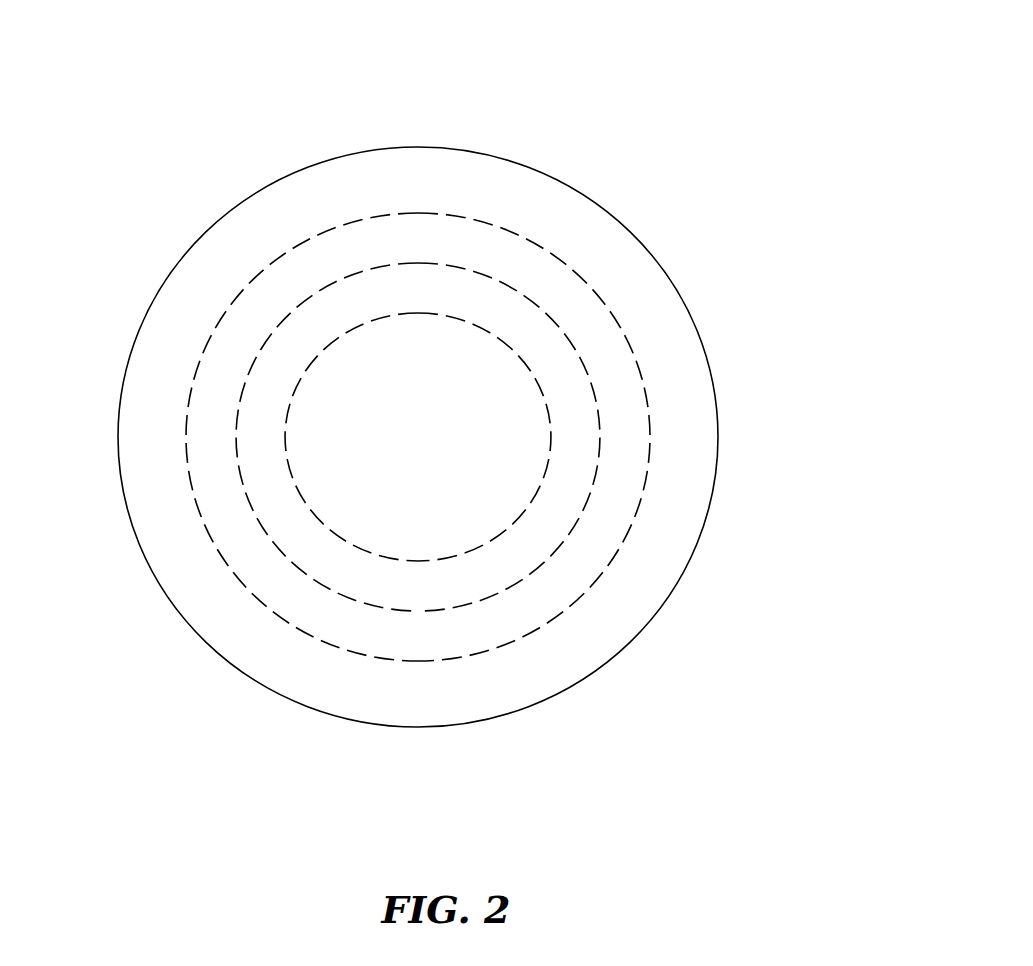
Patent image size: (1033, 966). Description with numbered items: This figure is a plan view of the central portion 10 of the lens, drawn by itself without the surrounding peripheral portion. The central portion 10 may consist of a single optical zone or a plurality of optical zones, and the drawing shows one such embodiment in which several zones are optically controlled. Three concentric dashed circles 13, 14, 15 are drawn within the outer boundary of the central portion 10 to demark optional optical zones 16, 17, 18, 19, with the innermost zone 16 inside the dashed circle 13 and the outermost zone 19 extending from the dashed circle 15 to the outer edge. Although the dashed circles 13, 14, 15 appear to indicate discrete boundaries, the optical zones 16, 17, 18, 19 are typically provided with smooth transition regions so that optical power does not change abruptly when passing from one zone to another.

The central portion 10 is at (590, 70).
The dashed circle 13 is at (545, 400).
The dashed circle 14 is at (597, 400).
The dashed circle 15 is at (648, 467).
The optical zone 16 is at (435, 370).
The optical zone 17 is at (335, 313).
The optical zone 18 is at (237, 347).
The optical zone 19 is at (153, 380).